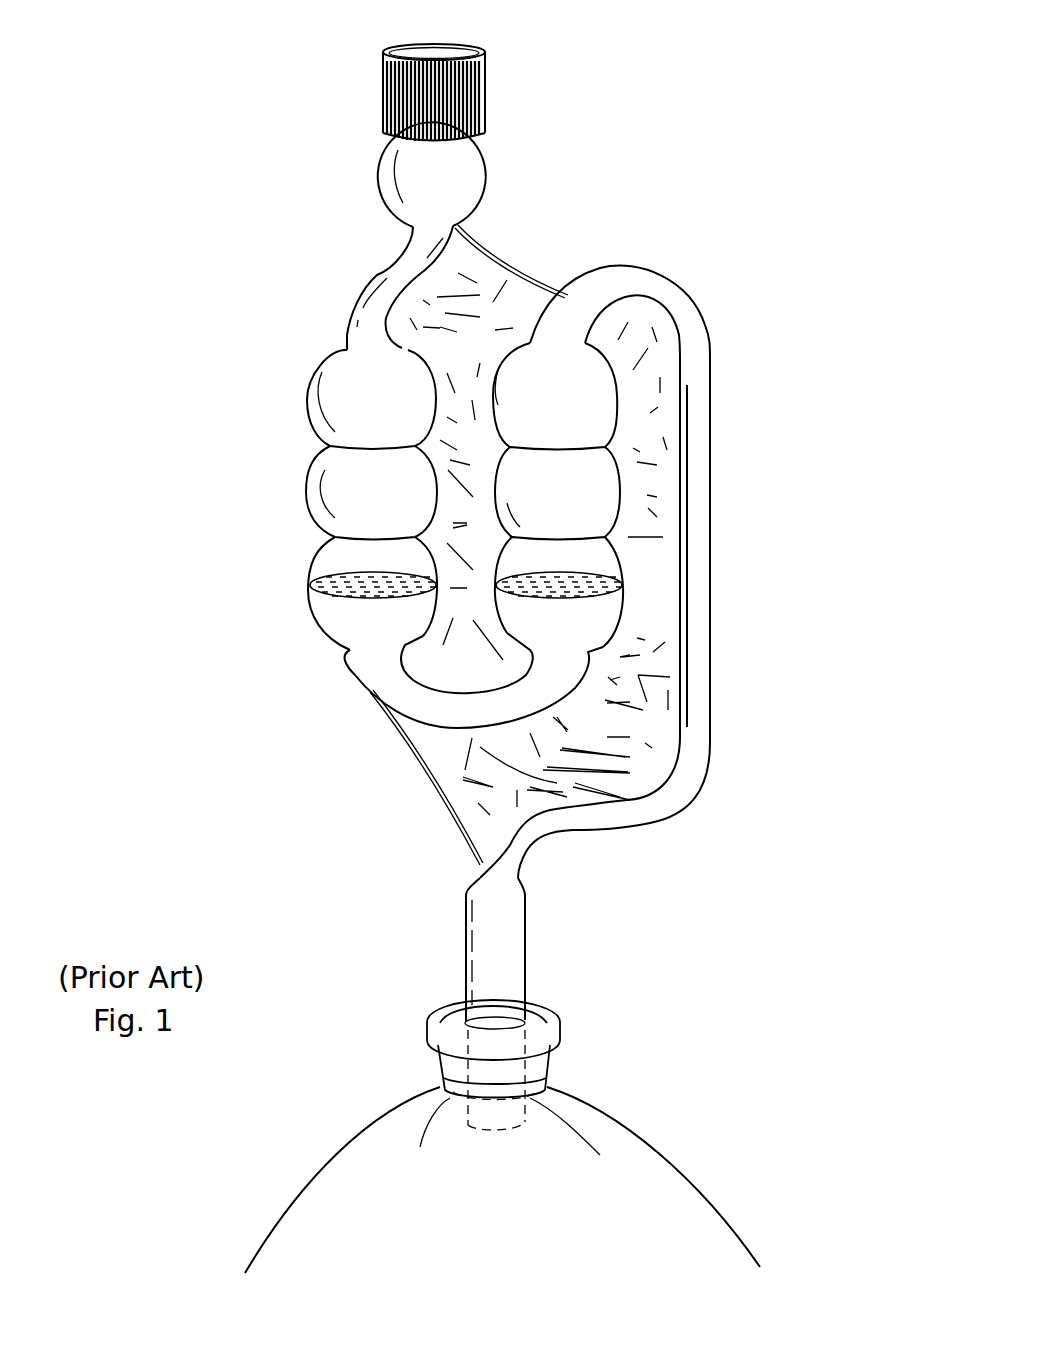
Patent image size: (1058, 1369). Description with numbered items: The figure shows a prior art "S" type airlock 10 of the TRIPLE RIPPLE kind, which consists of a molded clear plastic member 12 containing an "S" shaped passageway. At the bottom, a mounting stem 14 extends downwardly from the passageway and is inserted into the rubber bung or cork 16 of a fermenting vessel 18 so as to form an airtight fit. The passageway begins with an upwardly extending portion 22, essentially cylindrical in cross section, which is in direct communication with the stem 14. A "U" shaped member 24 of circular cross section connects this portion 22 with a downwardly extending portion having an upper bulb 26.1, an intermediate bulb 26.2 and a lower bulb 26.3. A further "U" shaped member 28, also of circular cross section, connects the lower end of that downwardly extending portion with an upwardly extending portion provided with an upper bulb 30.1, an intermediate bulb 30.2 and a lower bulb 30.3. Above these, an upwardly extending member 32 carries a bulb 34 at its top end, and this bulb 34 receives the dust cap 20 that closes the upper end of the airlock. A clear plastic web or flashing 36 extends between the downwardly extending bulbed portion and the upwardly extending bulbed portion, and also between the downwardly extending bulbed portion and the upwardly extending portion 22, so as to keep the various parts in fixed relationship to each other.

The airlock 10 is at (720, 110).
The molded clear plastic member 12 is at (798, 484).
The mounting stem 14 is at (507, 932).
The rubber bung or cork 16 is at (533, 1018).
The fermenting vessel 18 is at (613, 1118).
The dust cap 20 is at (485, 92).
The upwardly extending portion 22 is at (708, 611).
The "U" shaped member 24 is at (672, 288).
The upper bulb 26.1 is at (587, 388).
The intermediate bulb 26.2 is at (602, 480).
The lower bulb 26.3 is at (600, 555).
The further "U" shaped member 28 is at (403, 698).
The upper bulb 30.1 is at (325, 365).
The intermediate bulb 30.2 is at (325, 468).
The lower bulb 30.3 is at (330, 548).
The upwardly extending member 32 is at (392, 263).
The bulb 34 is at (487, 174).
The clear plastic web or flashing 36 is at (522, 272).